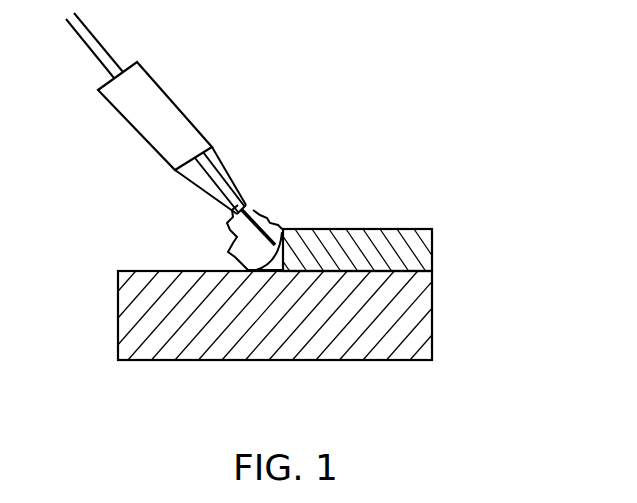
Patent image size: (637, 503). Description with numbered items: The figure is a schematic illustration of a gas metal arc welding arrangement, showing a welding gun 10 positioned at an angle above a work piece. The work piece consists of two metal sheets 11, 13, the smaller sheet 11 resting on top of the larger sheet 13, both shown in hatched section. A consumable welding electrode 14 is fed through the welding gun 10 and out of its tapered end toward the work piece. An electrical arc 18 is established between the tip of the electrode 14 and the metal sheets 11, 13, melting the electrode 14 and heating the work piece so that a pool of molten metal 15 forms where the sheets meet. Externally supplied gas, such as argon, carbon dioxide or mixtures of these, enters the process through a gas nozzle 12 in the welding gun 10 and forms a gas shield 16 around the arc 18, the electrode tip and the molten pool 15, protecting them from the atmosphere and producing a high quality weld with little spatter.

The welding gun 10 is at (112, 107).
The metal sheet 11 is at (433, 254).
The gas nozzle 12 is at (213, 162).
The metal sheet 13 is at (433, 336).
The consumable welding electrode 14 is at (253, 210).
The pool of molten metal 15 is at (284, 230).
The gas shield 16 is at (228, 235).
The electrical arc 18 is at (263, 252).